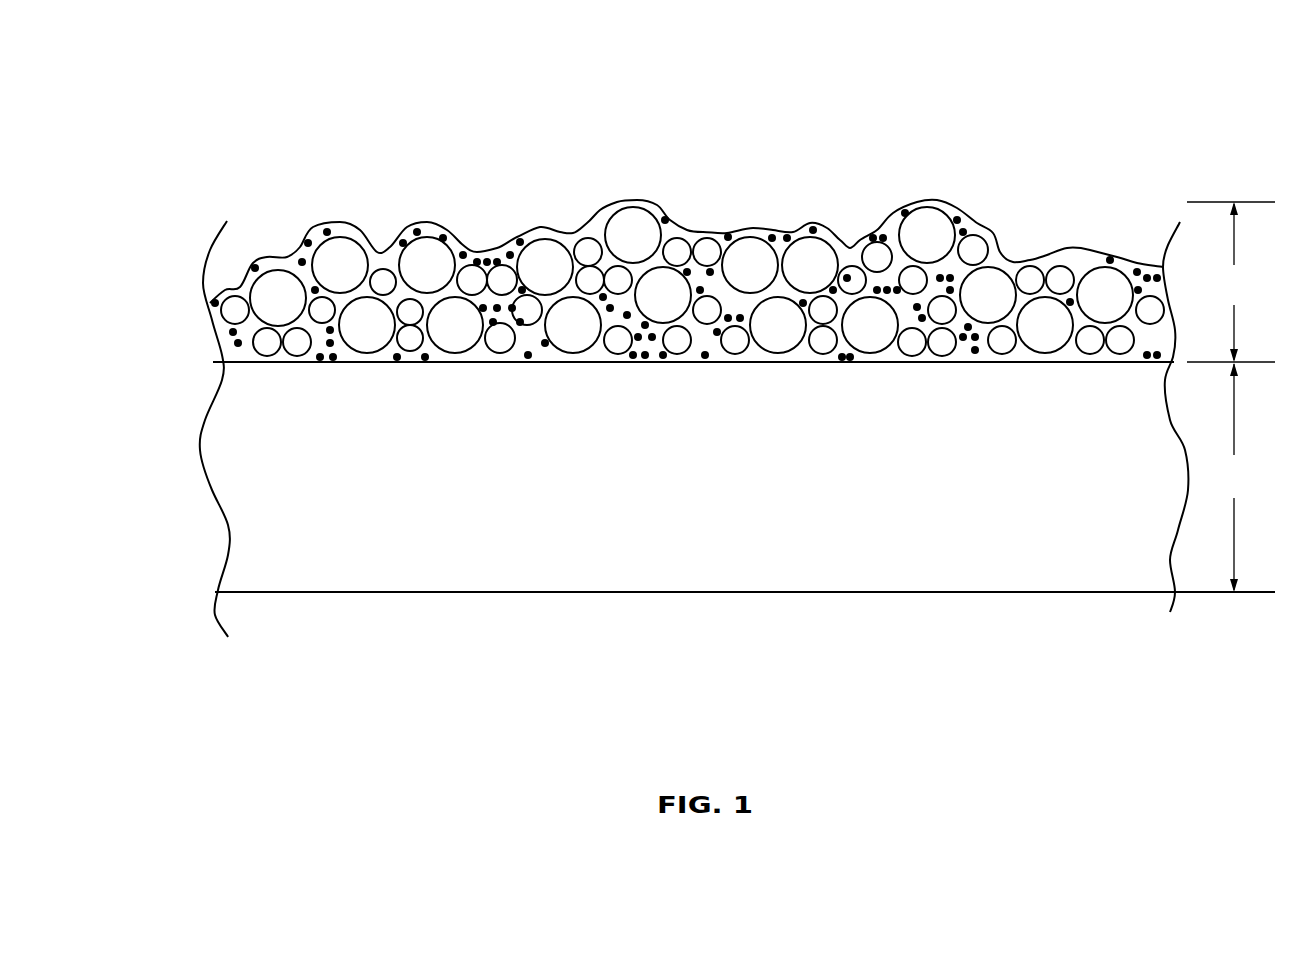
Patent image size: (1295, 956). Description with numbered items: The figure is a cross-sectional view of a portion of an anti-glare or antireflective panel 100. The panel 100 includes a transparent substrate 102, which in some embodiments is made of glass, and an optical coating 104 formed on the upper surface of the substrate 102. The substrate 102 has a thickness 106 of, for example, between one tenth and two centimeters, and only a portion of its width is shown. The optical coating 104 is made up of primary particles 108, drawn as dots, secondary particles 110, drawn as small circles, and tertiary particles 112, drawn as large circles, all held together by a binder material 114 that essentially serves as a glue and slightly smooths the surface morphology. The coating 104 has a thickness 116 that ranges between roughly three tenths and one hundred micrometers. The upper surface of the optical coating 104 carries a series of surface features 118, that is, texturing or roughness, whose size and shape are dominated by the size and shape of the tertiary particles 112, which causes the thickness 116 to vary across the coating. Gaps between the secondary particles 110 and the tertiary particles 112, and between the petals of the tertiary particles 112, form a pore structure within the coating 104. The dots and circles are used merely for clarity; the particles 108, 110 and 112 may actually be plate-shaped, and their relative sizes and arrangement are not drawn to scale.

The anti-glare panel 100 is at (967, 135).
The transparent substrate 102 is at (477, 553).
The optical coating 104 is at (173, 237).
The thickness of the transparent substrate 106 is at (1231, 397).
The primary particles 108 is at (667, 207).
The secondary particles 110 is at (1062, 278).
The tertiary particles 112 is at (280, 293).
The binder material 114 is at (530, 225).
The thickness of the optical coating 116 is at (1235, 282).
The surface features 118 is at (345, 196).